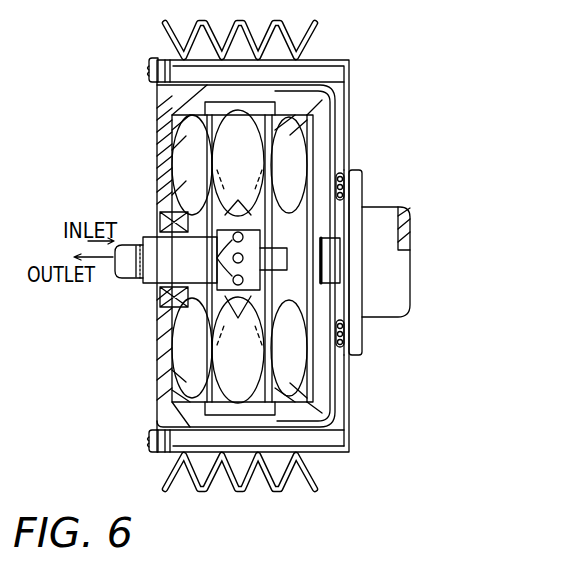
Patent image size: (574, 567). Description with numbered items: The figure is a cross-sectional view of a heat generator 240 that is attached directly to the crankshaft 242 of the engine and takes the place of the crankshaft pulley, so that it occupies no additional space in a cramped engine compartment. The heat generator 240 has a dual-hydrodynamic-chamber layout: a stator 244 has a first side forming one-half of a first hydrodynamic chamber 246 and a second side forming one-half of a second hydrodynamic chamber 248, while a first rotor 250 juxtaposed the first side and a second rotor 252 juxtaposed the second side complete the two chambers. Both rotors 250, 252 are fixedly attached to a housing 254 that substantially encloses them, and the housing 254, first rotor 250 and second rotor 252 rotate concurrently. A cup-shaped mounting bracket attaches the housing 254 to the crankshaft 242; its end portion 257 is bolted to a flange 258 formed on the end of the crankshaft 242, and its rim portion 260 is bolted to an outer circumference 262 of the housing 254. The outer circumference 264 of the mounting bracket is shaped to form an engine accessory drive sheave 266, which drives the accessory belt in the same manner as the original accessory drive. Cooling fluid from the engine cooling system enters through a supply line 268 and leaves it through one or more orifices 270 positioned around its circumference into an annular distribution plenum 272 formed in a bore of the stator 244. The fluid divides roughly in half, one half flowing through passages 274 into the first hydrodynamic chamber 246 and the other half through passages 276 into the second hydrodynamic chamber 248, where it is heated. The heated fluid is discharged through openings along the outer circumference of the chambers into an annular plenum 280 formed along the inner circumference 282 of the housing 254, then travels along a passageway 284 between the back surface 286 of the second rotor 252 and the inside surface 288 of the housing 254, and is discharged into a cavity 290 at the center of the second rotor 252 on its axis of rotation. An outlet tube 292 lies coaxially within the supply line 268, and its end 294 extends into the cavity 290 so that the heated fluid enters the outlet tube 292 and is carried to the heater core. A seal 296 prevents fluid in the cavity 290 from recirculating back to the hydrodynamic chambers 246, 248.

The heat generator 240 is at (53, 80).
The crankshaft 242 is at (398, 317).
The stator 244 is at (257, 85).
The first hydrodynamic chamber 246 is at (160, 122).
The second hydrodynamic chamber 248 is at (335, 133).
The first rotor 250 is at (160, 155).
The second rotor 252 is at (313, 160).
The housing 254 is at (157, 402).
The end portion 257 is at (348, 390).
The flange 258 is at (352, 180).
The rim portion 260 is at (168, 456).
The outer circumference 262 is at (330, 457).
The outer circumference 264 is at (350, 60).
The engine accessory drive sheave 266 is at (309, 40).
The supply line 268 is at (150, 283).
The orifices 270 is at (217, 258).
The annular distribution plenum 272 is at (155, 187).
The passages 274 is at (330, 290).
The passages 276 is at (250, 335).
The annular plenum 280 is at (243, 408).
The inner circumference 282 is at (312, 105).
The passageway 284 is at (307, 140).
The back surface 286 is at (333, 197).
The inside surface 288 is at (335, 212).
The cavity 290 is at (262, 240).
The outlet tube 292 is at (118, 268).
The end 294 is at (290, 258).
The seal 296 is at (262, 288).